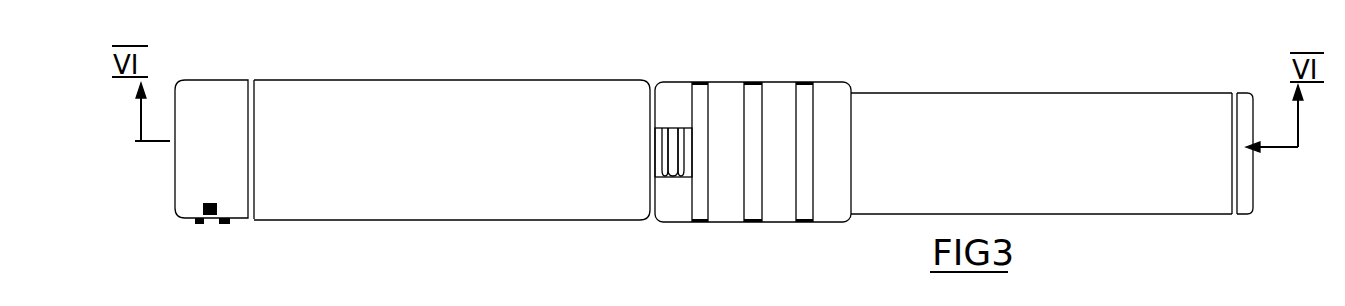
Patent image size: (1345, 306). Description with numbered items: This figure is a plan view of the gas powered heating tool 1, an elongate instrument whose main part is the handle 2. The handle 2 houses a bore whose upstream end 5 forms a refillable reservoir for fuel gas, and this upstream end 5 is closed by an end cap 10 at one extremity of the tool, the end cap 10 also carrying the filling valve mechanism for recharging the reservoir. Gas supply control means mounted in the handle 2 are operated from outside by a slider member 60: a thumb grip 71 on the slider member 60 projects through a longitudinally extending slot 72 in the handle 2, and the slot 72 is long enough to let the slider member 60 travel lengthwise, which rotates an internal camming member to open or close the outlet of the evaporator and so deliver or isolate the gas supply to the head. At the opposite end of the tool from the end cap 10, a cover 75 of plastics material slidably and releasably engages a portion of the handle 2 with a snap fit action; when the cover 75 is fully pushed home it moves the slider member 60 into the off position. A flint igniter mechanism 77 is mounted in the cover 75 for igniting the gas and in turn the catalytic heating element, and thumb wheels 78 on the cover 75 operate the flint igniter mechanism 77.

The gas powered heating tool 1 is at (534, 53).
The handle 2 is at (1108, 108).
The upstream end 5 is at (1232, 96).
The end cap 10 is at (1245, 207).
The slider member 60 is at (670, 140).
The thumb grip 71 is at (673, 148).
The slot 72 is at (665, 128).
The cover 75 is at (477, 205).
The flint igniter mechanism 77 is at (210, 220).
The thumb wheels 78 is at (199, 223).